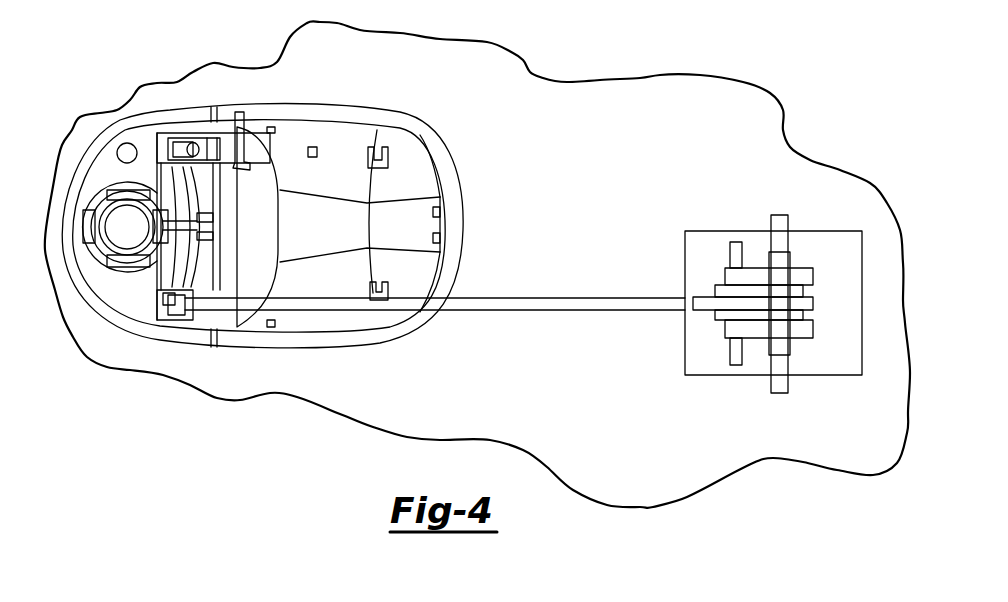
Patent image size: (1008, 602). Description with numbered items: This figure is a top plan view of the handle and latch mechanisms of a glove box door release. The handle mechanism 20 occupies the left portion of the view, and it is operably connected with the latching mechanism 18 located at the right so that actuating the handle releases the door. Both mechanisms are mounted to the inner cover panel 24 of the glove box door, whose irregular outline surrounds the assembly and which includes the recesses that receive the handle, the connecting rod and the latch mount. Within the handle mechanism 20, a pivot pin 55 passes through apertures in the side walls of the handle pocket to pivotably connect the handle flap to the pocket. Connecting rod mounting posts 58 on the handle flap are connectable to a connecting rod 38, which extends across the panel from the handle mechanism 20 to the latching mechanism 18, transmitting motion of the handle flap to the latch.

The latching mechanism 18 is at (691, 212).
The handle mechanism 20 is at (352, 92).
The inner cover panel 24 is at (545, 76).
The connecting rod 38 is at (505, 296).
The pivot pin 55 is at (218, 227).
The connecting rod mounting posts 58 is at (166, 308).